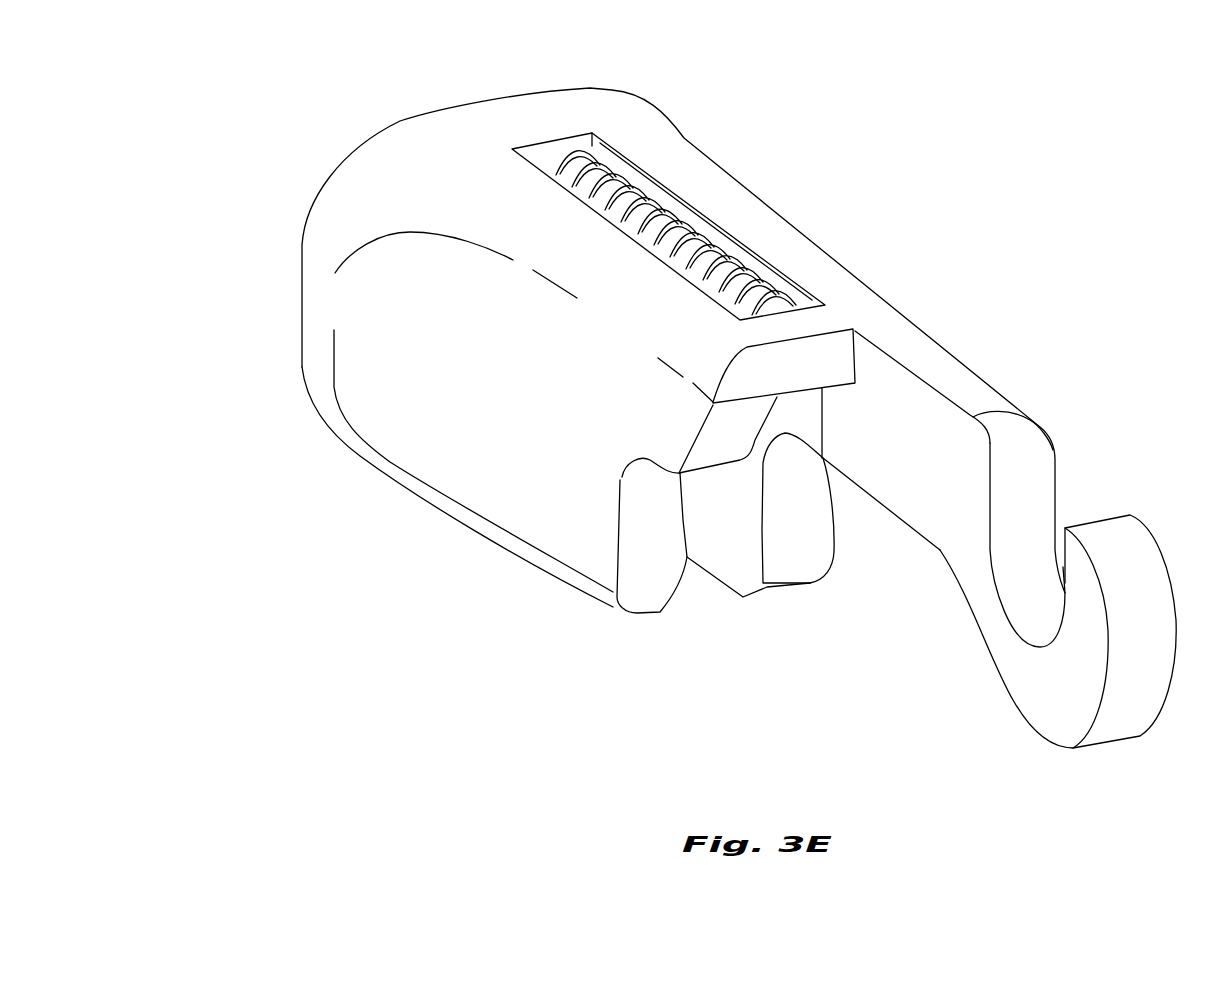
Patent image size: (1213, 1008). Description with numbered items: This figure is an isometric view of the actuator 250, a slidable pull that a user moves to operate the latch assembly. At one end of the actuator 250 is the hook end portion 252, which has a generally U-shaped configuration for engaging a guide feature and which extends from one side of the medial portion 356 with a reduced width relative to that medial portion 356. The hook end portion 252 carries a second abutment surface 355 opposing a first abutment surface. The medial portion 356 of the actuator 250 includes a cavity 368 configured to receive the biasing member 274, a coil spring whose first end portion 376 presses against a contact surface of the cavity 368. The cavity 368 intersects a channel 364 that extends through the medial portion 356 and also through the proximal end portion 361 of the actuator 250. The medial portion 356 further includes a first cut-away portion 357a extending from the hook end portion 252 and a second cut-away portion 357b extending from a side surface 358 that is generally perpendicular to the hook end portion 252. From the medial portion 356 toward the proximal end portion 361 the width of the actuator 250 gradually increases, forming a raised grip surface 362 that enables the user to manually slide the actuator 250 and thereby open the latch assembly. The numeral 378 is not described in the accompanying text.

The actuator 250 is at (468, 433).
The hook end portion 252 is at (1047, 707).
The biasing member 274 is at (703, 228).
The second abutment surface 355 is at (1025, 467).
The medial portion 356 is at (874, 552).
The first cut-away portion 357a is at (800, 555).
The second cut-away portion 357b is at (642, 583).
The side surface 358 is at (807, 360).
The proximal end portion 361 is at (262, 330).
The grip surface 362 is at (365, 307).
The channel 364 is at (725, 560).
The cavity 368 is at (670, 192).
The first end portion 376 is at (782, 290).
The spring end 378 is at (585, 155).